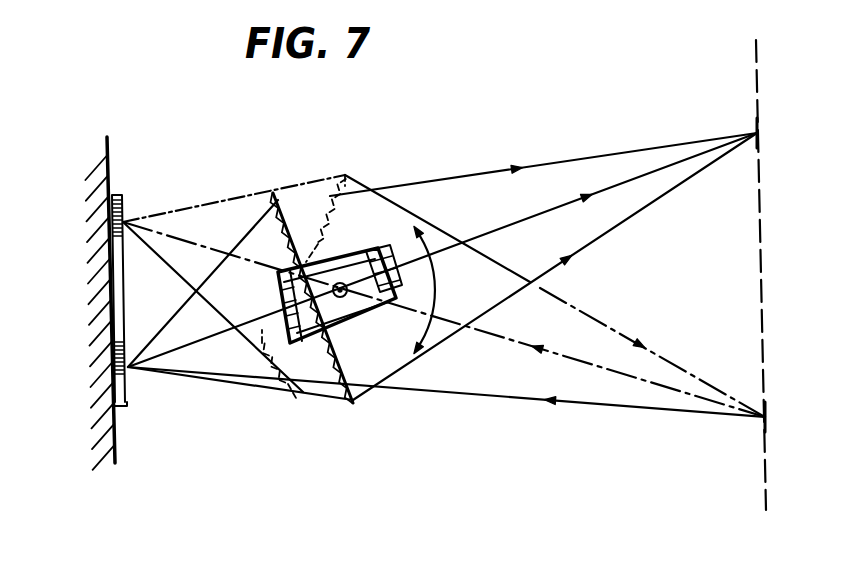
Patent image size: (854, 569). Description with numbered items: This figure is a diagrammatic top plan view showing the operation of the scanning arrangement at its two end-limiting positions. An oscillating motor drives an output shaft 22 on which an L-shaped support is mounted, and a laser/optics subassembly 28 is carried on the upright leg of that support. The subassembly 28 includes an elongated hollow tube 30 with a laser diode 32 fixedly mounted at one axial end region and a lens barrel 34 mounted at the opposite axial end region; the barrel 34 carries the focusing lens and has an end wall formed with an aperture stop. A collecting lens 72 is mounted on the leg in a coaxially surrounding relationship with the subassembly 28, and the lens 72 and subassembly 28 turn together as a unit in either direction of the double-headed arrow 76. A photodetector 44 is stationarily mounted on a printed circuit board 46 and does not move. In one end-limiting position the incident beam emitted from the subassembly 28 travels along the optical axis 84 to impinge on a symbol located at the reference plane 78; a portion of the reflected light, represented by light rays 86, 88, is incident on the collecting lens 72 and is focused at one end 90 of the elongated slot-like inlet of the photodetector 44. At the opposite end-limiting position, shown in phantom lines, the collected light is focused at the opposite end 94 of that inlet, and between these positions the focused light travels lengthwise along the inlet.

The output shaft 22 is at (340, 350).
The laser/optics subassembly 28 is at (353, 333).
The elongated hollow tube 30 is at (324, 245).
The laser diode 32 is at (288, 340).
The lens barrel 34 is at (372, 252).
The photodetector 44 is at (119, 194).
The printed circuit board 46 is at (107, 143).
The collecting lens 72 is at (272, 192).
The double-headed arrow 76 is at (437, 284).
The reference plane 78 is at (757, 62).
The optical axis 84 is at (561, 206).
The light ray 86 is at (650, 150).
The light ray 88 is at (646, 215).
The end of inlet 90 is at (130, 372).
The opposite end of inlet 94 is at (126, 221).